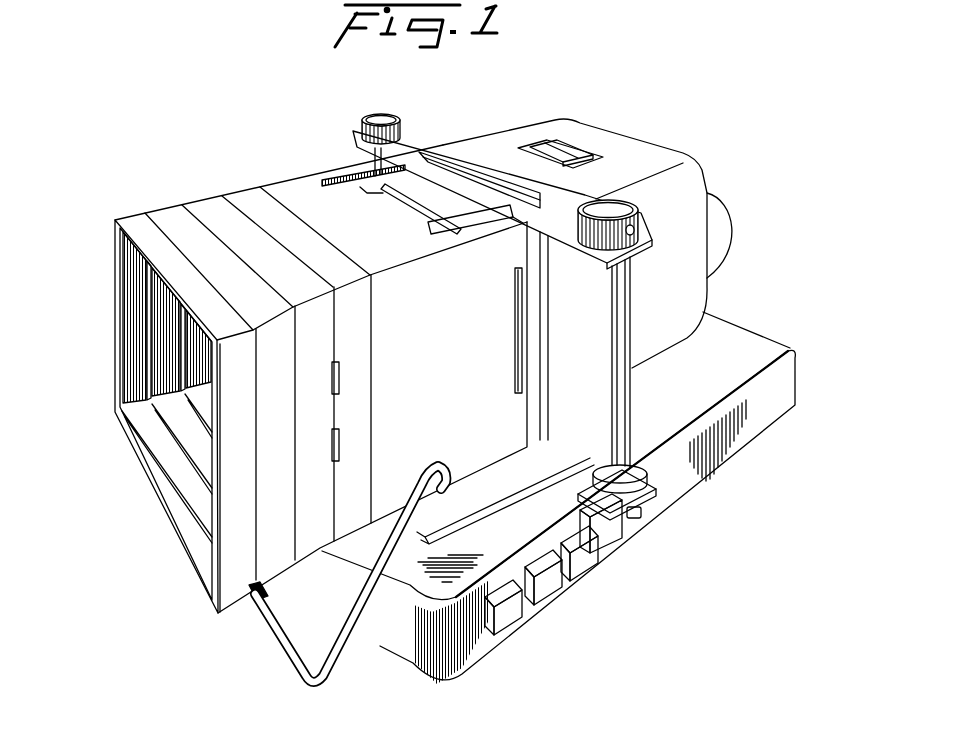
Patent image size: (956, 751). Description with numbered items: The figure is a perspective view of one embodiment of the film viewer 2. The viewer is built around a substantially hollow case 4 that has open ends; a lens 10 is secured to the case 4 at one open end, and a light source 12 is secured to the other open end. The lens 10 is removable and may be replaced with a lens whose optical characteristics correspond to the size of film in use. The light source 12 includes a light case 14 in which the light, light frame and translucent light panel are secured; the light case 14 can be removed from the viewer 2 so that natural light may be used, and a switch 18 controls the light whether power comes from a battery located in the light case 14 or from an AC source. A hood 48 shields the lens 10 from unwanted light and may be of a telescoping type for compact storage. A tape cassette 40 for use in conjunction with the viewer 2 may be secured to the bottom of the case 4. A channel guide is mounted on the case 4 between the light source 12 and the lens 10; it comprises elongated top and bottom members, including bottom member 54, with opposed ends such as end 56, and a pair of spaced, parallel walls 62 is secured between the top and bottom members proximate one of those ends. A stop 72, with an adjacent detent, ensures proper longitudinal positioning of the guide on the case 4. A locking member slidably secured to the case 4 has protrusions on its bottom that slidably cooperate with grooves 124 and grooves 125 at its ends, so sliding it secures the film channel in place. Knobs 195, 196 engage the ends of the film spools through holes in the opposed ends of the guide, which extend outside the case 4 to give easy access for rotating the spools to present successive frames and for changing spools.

The film viewer 2 is at (268, 72).
The case 4 is at (457, 445).
The lens 10 is at (227, 203).
The light source 12 is at (710, 181).
The light case 14 is at (627, 150).
The switch 18 is at (547, 143).
The tape cassette 40 is at (628, 532).
The hood 48 is at (118, 323).
The bottom member 54 is at (645, 480).
The opposed end 56 is at (430, 142).
The pair of walls 62 is at (540, 404).
The stop 72 is at (517, 357).
The grooves 124 is at (384, 197).
The grooves 125 is at (338, 186).
The knob 195 is at (373, 112).
The knob 196 is at (643, 510).